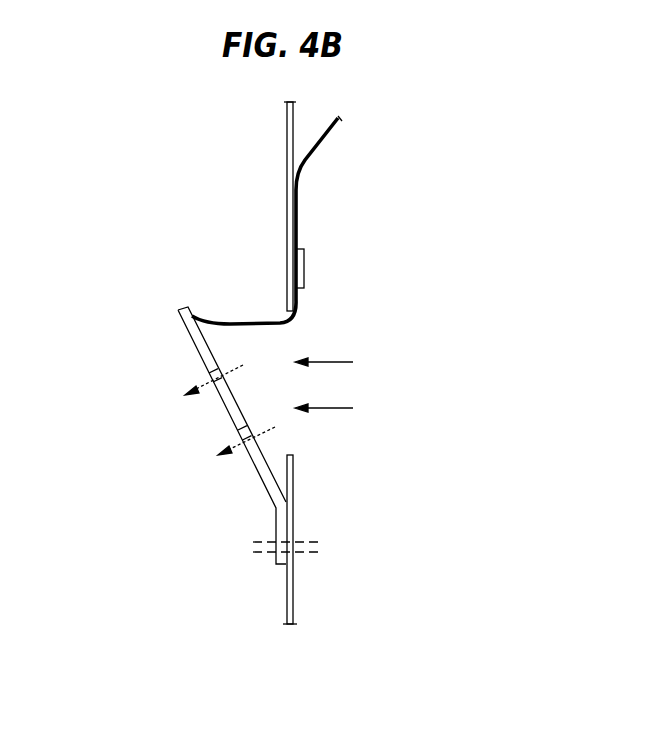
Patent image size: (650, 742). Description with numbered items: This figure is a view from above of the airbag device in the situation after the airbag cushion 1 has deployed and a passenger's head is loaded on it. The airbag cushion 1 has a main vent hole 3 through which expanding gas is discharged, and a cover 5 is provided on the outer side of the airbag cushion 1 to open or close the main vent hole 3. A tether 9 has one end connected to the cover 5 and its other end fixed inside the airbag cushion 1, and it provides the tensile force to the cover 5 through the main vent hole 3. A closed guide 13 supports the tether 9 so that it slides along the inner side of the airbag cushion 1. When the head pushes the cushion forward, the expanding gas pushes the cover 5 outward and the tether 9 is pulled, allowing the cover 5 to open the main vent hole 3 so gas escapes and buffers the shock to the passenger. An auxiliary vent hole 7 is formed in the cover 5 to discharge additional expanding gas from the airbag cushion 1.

The airbag cushion 1 is at (287, 127).
The tether 9 is at (345, 135).
The closed guide 13 is at (306, 268).
The main vent hole 3 is at (294, 378).
The cover 5 is at (258, 474).
The auxiliary vent hole 7 is at (213, 373).